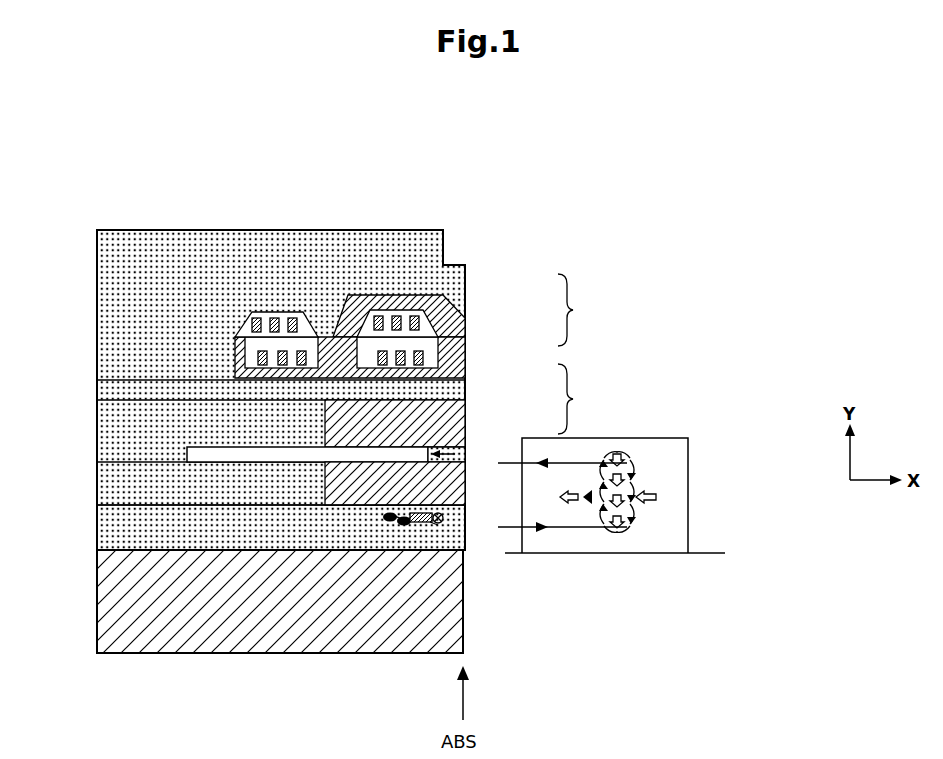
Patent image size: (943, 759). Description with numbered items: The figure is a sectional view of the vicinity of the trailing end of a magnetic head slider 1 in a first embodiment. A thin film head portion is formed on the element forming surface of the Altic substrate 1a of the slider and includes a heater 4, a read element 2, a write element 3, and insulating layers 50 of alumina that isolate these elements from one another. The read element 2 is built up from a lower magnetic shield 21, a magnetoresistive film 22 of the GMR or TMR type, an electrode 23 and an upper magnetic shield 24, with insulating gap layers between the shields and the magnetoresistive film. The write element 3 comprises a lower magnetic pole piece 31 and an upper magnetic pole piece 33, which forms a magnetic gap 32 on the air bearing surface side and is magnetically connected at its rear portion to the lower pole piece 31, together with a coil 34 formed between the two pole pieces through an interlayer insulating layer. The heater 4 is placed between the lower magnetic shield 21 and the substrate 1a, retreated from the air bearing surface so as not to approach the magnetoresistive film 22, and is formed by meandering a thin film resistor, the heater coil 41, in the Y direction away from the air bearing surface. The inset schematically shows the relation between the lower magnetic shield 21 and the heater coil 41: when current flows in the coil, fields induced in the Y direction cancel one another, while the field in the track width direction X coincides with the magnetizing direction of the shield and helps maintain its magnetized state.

The magnetic head slider 1 is at (424, 209).
The Altic substrate 1a is at (425, 621).
The read element 2 is at (429, 456).
The write element 3 is at (410, 325).
The heater 4 is at (436, 531).
The lower magnetic shield 21 is at (465, 486).
The magnetoresistive film 22 is at (465, 463).
The electrode 23 is at (465, 441).
The upper magnetic shield 24 is at (465, 413).
The lower magnetic pole piece 31 is at (465, 358).
The magnetic gap 32 is at (440, 324).
The upper magnetic pole piece 33 is at (460, 326).
The coil 34 is at (453, 308).
The heater coil 41 is at (566, 554).
The insulating layers 50 is at (97, 304).